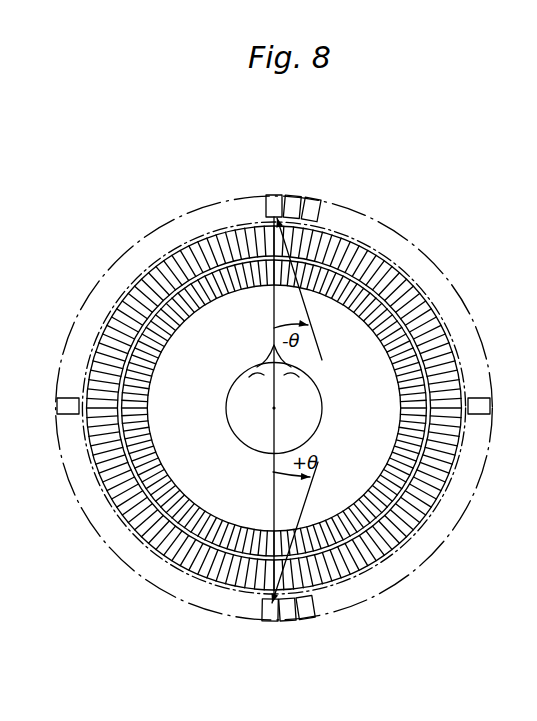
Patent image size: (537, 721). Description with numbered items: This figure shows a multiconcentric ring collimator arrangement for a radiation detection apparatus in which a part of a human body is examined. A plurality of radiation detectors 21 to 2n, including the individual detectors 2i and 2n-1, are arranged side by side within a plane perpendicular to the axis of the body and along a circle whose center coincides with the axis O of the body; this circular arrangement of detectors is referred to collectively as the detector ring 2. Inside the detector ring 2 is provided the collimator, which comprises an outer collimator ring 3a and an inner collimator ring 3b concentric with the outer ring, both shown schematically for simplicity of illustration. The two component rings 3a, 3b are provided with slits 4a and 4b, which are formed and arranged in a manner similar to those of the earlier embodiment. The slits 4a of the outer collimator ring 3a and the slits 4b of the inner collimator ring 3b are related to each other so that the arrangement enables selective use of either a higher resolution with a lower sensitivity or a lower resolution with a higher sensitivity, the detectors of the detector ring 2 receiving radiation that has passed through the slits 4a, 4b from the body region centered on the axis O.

The detector ring 2 is at (430, 247).
The radiation detector 2n-1 is at (270, 195).
The radiation detector 2n is at (292, 195).
The radiation detector 21 is at (318, 200).
The radiation detector 2i is at (269, 618).
The outer collimator ring 3a is at (437, 307).
The inner collimator ring 3b is at (434, 373).
The slits 4a is at (355, 249).
The slits 4b is at (384, 343).
The axis O is at (273, 409).